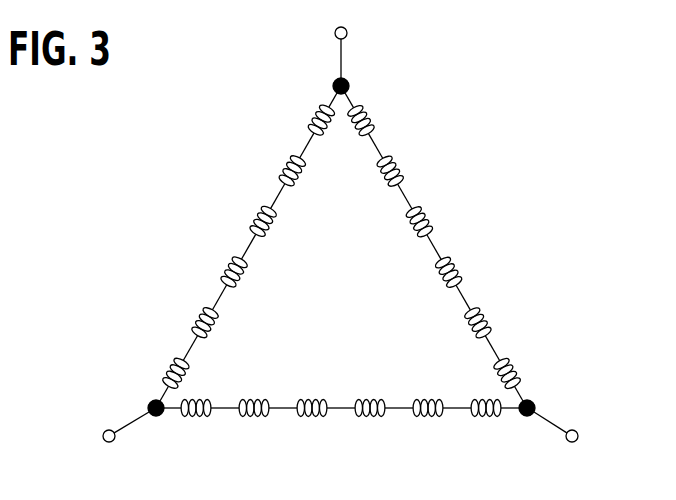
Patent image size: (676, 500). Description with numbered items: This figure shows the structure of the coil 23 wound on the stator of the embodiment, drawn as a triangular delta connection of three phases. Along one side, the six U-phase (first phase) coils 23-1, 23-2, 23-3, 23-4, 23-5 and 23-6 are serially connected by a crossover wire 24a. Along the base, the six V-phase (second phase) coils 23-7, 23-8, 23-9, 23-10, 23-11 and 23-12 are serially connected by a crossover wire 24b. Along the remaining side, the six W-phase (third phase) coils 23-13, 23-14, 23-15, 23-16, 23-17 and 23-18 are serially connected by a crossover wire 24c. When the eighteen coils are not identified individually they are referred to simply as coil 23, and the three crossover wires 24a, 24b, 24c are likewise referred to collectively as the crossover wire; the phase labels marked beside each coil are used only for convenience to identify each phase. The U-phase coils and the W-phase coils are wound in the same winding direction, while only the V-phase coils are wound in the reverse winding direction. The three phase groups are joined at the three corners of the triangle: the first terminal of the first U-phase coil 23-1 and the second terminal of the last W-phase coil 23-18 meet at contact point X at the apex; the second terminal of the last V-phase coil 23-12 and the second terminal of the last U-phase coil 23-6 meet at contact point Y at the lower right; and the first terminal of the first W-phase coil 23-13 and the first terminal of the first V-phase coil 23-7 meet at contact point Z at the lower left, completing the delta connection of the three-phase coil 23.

The coil 23 is at (427, 71).
The coil U1 23-1 is at (374, 130).
The coil U2 23-2 is at (403, 180).
The coil U3 23-3 is at (432, 231).
The coil U4 23-4 is at (462, 281).
The coil U5 23-5 is at (491, 332).
The coil U6 23-6 is at (520, 382).
The coil V1 23-7 is at (187, 417).
The coil V2 23-8 is at (251, 417).
The coil V3 23-9 is at (318, 417).
The coil V4 23-10 is at (380, 417).
The coil V5 23-11 is at (430, 417).
The coil V6 23-12 is at (495, 417).
The coil W1 23-13 is at (162, 381).
The coil W2 23-14 is at (191, 331).
The coil W3 23-15 is at (220, 280).
The coil W4 23-16 is at (249, 229).
The coil W5 23-17 is at (278, 179).
The coil W6 23-18 is at (308, 128).
The crossover wire 24a is at (379, 148).
The crossover wire 24b is at (228, 406).
The crossover wire 24c is at (188, 350).